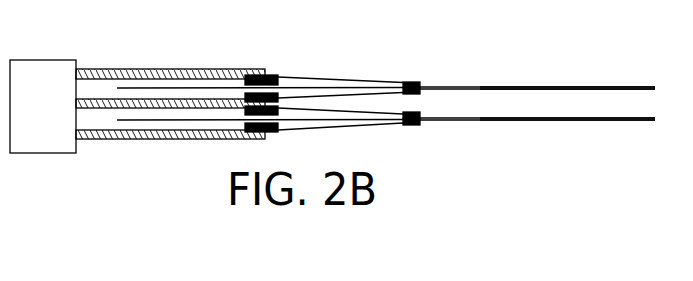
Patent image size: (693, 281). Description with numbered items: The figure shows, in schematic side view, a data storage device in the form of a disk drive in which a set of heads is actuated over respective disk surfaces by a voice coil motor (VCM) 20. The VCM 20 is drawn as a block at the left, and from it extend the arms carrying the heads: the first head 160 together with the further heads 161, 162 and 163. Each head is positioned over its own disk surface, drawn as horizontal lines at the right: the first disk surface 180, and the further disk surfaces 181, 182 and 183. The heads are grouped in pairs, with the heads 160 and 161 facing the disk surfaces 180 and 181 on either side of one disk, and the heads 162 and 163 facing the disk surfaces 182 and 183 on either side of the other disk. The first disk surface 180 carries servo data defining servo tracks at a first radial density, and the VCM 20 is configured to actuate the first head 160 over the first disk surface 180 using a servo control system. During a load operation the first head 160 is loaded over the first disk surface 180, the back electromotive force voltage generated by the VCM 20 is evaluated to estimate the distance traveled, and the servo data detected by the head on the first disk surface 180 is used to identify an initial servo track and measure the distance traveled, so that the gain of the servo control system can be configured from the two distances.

The voice coil motor (VCM) 20 is at (42, 60).
The first head 160 is at (442, 73).
The head 161 is at (422, 93).
The head 162 is at (422, 119).
The head 163 is at (422, 124).
The first disk surface 180 is at (554, 88).
The disk surface 181 is at (597, 89).
The disk surface 182 is at (583, 118).
The disk surface 183 is at (597, 120).